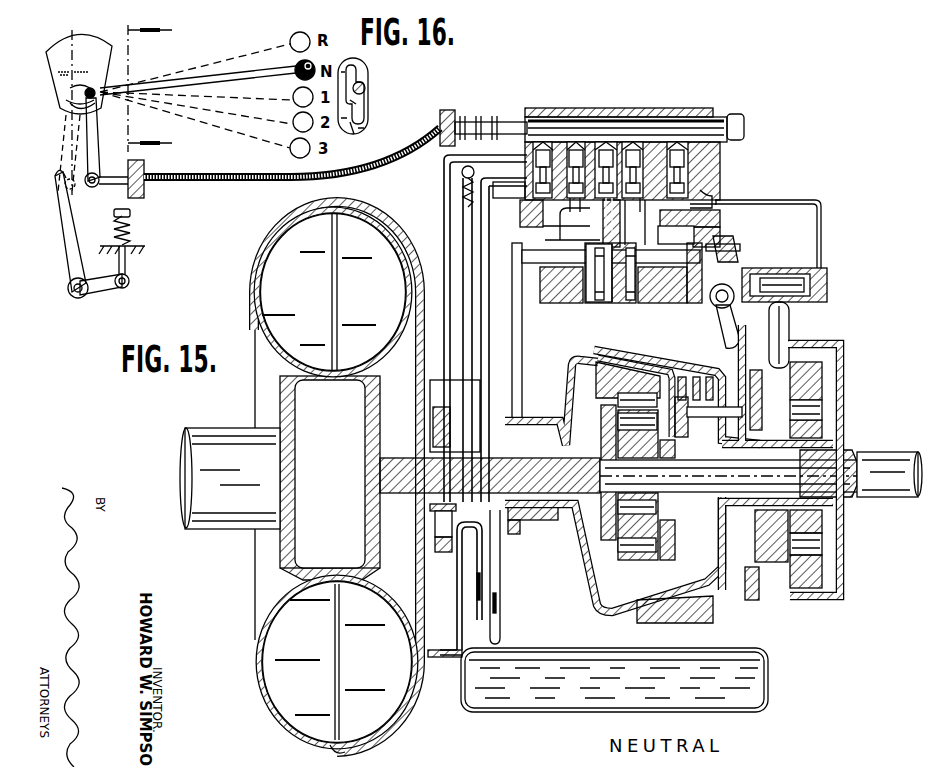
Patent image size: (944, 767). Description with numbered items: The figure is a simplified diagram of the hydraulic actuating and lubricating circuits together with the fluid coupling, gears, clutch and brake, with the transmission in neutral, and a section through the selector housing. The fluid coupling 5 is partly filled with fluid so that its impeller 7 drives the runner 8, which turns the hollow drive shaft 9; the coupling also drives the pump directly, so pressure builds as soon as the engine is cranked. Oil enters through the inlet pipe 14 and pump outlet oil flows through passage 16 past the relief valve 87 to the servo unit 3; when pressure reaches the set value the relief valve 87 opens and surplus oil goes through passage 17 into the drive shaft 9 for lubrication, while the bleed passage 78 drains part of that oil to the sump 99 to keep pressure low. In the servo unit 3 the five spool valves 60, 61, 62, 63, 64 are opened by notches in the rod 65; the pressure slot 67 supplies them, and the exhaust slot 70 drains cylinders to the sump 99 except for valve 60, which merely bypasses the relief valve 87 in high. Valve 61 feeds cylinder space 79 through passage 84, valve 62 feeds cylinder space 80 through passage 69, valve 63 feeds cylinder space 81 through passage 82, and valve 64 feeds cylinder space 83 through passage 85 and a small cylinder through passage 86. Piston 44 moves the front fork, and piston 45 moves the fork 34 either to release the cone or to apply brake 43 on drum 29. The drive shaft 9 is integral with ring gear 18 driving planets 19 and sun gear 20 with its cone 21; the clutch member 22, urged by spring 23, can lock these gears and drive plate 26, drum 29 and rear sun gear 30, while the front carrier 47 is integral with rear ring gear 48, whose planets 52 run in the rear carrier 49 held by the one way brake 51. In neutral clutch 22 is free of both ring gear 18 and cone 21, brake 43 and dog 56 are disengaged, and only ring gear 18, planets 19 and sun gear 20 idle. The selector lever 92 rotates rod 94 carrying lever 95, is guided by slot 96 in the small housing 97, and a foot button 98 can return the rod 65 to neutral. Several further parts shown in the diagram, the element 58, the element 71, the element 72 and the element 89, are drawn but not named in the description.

In FIG. 15, the servo unit 3 is at (702, 152).
In FIG. 15, the fluid coupling 5 is at (250, 302).
In FIG. 15, the impeller 7 is at (333, 292).
In FIG. 15, the runner 8 is at (359, 291).
In FIG. 15, the drive shaft 9 is at (400, 470).
In FIG. 15, the inlet pipe 14 is at (465, 517).
In FIG. 15, the passage 16 is at (443, 200).
In FIG. 15, the passage 17 is at (480, 230).
In FIG. 15, the ring gear 18 is at (622, 560).
In FIG. 15, the planets 19 is at (652, 545).
In FIG. 15, the sun gear 20 is at (665, 520).
In FIG. 15, the cone clutch element 21 is at (628, 358).
In FIG. 15, the inner clutch member 22 is at (594, 353).
In FIG. 15, the spring 23 is at (720, 366).
In FIG. 15, the plate 26 is at (590, 578).
In FIG. 15, the brake drum 29 is at (612, 614).
In FIG. 15, the rear sun gear 30 is at (808, 432).
In FIG. 15, the fork 34 is at (712, 250).
In FIG. 15, the brake 43 is at (675, 622).
In FIG. 15, the piston 44 is at (578, 290).
In FIG. 15, the piston 45 is at (687, 290).
In FIG. 15, the front carrier 47 is at (598, 380).
In FIG. 15, the rear ring gear 48 is at (844, 346).
In FIG. 15, the rear carrier 49 is at (776, 564).
In FIG. 15, the roller bearing and one way brake 51 is at (806, 412).
In FIG. 15, the planets 52 is at (822, 378).
In FIG. 15, the dog 56 is at (780, 330).
In FIG. 15, the governor valve 58 is at (788, 272).
In FIG. 15, the spool valve 60 is at (548, 142).
In FIG. 15, the spool valve 61 is at (580, 142).
In FIG. 15, the spool valve 62 is at (608, 142).
In FIG. 15, the spool valve 63 is at (640, 150).
In FIG. 15, the spool valve 64 is at (722, 114).
In FIG. 15, the rod 65 is at (745, 122).
In FIG. 15, the pressure slot 67 is at (688, 165).
In FIG. 15, the passage 69 is at (610, 273).
In FIG. 15, the exhaust slot 70 is at (702, 172).
In FIG. 15, the cable anchor 71 is at (492, 122).
In FIG. 15, the control cable 72 is at (262, 186).
In FIG. 15, the bleed passage 78 is at (509, 190).
In FIG. 15, the cylinder space 79 is at (560, 292).
In FIG. 15, the cylinder space 80 is at (676, 235).
In FIG. 15, the cylinder space 81 is at (645, 290).
In FIG. 15, the passage 82 is at (622, 180).
In FIG. 15, the cylinder space 83 is at (601, 290).
In FIG. 15, the passage 84 is at (555, 250).
In FIG. 15, the passage 85 is at (712, 196).
In FIG. 15, the passage 86 is at (819, 198).
In FIG. 15, the relief valve 87 is at (462, 191).
In FIG. 15, the support plate 89 is at (512, 252).
In FIG. 16, the control or speed selector lever 92 is at (366, 84).
In FIG. 15, the control or speed selector lever 92 is at (311, 63).
In FIG. 15, the rod 94 is at (68, 92).
In FIG. 15, the lever 95 is at (83, 147).
In FIG. 16, the slot 96 is at (358, 102).
In FIG. 16, the small housing 97 is at (354, 126).
In FIG. 15, the small housing 97 is at (99, 118).
In FIG. 15, the foot button 98 is at (143, 217).
In FIG. 15, the sump 99 is at (556, 700).